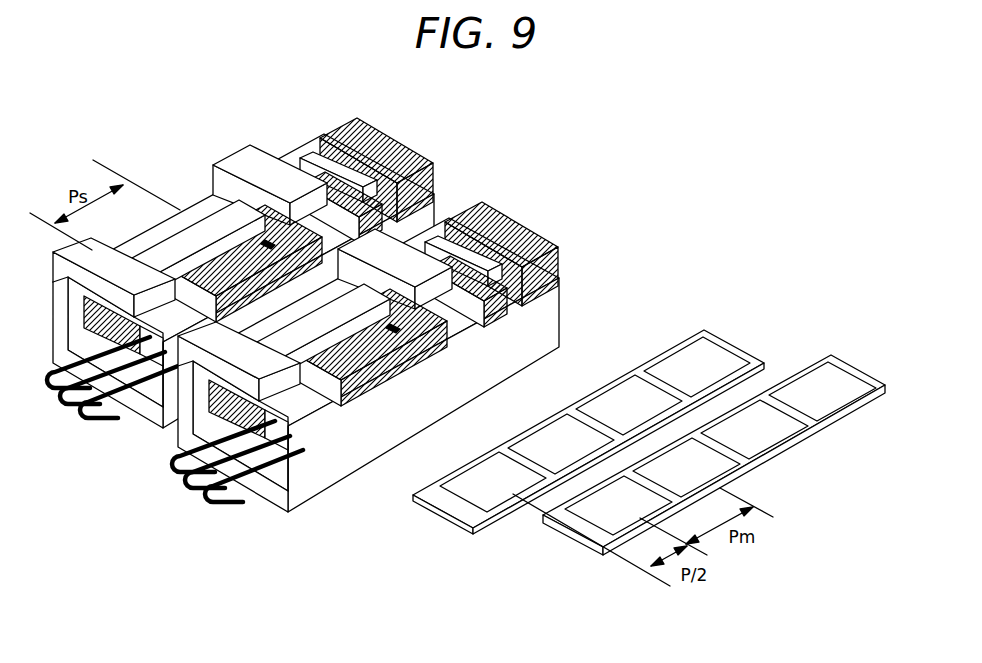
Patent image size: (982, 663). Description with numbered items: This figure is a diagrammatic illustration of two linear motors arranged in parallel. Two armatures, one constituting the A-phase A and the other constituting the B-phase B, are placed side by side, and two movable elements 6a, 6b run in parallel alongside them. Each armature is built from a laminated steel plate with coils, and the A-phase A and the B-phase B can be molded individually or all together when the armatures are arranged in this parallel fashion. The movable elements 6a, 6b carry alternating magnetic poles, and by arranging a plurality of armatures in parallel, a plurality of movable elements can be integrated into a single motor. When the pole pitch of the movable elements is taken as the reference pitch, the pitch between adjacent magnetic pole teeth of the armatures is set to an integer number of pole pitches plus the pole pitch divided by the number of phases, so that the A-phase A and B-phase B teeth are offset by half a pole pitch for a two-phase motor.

The A-phase A is at (402, 140).
The B-phase B is at (523, 217).
The movable element 6a is at (715, 326).
The movable element 6b is at (838, 360).